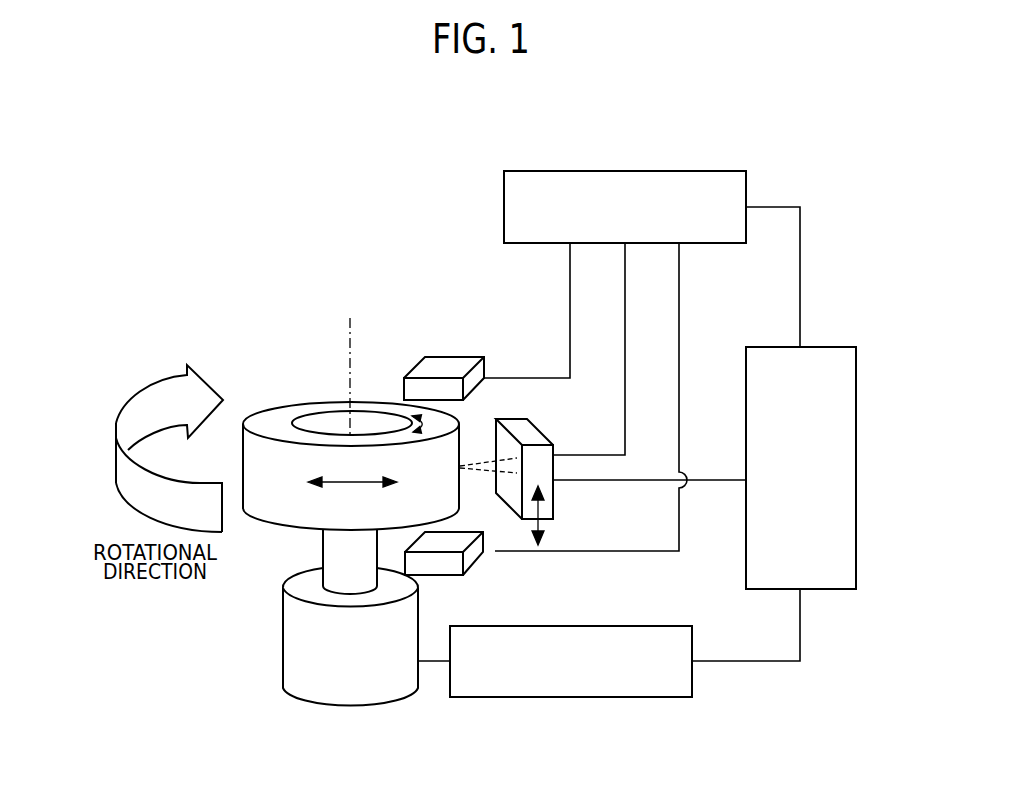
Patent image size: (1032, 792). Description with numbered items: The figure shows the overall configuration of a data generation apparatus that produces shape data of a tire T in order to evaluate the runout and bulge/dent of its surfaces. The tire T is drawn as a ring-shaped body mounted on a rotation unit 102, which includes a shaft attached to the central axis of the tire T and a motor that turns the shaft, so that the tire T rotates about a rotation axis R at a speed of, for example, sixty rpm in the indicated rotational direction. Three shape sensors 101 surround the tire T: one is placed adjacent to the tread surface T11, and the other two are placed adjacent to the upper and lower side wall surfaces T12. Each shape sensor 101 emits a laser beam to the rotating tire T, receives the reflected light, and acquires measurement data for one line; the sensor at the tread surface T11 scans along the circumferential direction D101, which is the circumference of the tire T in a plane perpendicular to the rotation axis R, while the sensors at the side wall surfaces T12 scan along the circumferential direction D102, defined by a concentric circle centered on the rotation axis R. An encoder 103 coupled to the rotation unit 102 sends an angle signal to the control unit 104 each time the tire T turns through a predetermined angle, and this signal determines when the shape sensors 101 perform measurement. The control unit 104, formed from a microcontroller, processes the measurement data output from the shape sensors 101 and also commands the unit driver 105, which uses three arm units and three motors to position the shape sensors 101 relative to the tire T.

The tire T is at (345, 449).
The tread surface T11 is at (262, 508).
The side wall surface T12 is at (282, 417).
The rotation axis R is at (351, 363).
The circumferential direction D101 is at (352, 496).
The circumferential direction D102 is at (430, 421).
The shape sensor 101 is at (537, 449).
The rotation unit 102 is at (292, 650).
The encoder 103 is at (692, 678).
The control unit 104 is at (820, 347).
The unit driver 105 is at (637, 171).